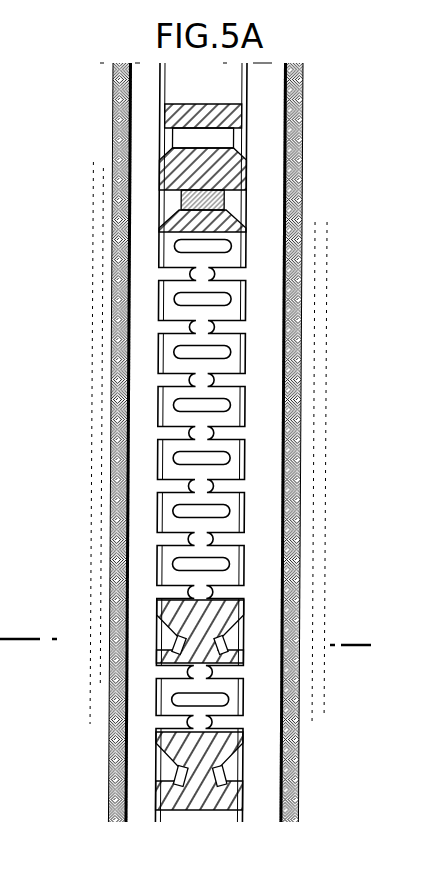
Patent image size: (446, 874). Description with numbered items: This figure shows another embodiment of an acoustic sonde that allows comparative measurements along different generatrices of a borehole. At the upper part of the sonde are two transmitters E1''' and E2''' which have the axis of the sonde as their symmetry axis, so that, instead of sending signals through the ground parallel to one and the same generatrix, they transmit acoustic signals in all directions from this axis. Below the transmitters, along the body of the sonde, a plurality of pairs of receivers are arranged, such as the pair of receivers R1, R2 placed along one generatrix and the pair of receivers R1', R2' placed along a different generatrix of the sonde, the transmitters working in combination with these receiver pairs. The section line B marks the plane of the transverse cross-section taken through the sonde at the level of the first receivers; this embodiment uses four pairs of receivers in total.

The transmitter E1''' is at (162, 129).
The transmitter E2''' is at (186, 189).
The receiver R1 is at (114, 630).
The receiver R1' is at (285, 621).
The receiver R2 is at (115, 759).
The receiver R2' is at (282, 759).
The section line B- B is at (18, 640).